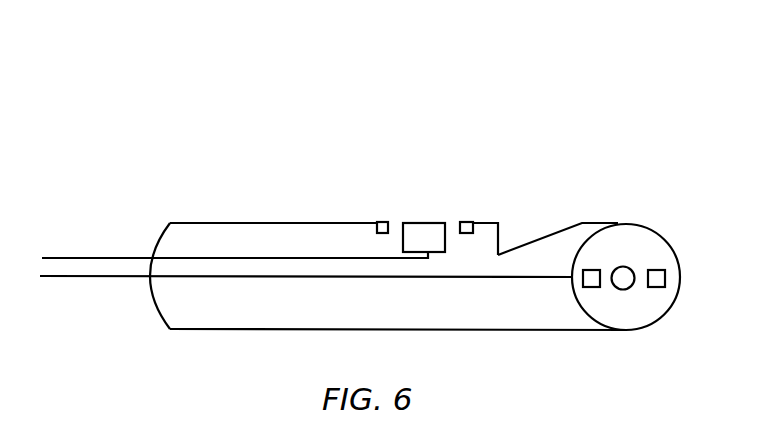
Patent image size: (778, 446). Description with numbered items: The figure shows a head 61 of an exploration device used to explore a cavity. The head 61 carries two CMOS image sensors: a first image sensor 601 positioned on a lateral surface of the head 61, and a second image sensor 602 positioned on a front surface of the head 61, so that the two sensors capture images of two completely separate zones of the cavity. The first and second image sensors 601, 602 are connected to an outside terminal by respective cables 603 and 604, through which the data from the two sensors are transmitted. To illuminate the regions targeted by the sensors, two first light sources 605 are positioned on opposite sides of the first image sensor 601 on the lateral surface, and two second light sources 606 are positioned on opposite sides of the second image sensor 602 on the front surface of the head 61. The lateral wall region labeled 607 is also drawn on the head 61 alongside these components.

The head 61 is at (393, 98).
The first image sensor 601 is at (432, 232).
The second image sensor 602 is at (627, 270).
The cable 603 is at (80, 256).
The cable 604 is at (85, 278).
The first light sources 605 is at (380, 222).
The second light sources 606 is at (663, 277).
The housing wall 607 is at (277, 221).